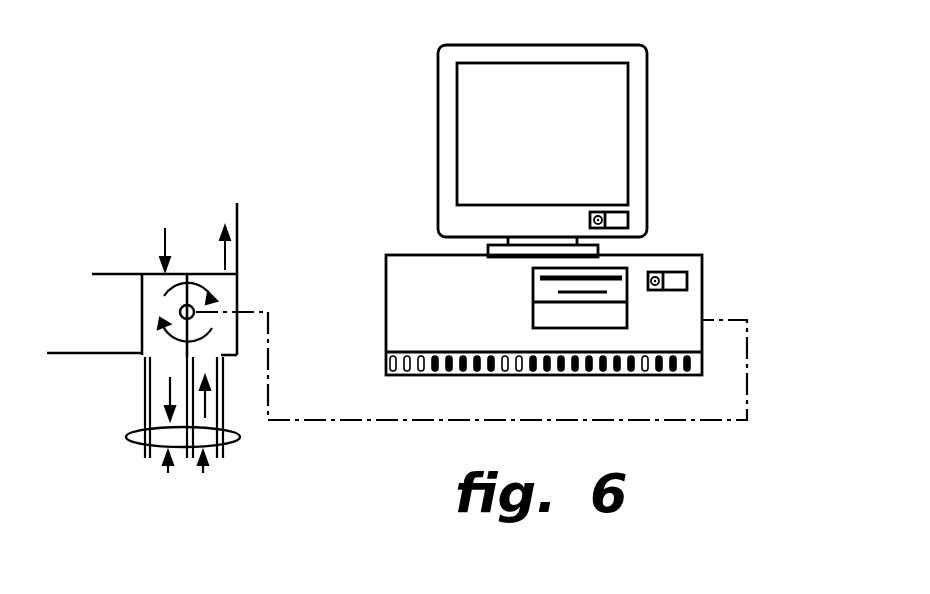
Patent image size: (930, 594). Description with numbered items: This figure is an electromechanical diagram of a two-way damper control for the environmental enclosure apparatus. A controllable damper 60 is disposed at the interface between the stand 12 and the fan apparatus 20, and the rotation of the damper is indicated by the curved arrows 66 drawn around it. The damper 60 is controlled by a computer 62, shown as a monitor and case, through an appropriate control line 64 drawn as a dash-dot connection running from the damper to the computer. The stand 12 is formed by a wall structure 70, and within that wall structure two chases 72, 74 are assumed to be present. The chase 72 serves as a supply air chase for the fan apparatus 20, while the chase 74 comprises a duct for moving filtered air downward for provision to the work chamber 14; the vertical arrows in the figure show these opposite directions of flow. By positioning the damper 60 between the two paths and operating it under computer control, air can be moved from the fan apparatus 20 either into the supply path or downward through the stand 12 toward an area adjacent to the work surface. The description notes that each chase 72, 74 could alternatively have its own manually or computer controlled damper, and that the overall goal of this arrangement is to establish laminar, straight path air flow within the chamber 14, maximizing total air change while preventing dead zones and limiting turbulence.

The stand 12 is at (146, 373).
The chamber 14 is at (84, 423).
The fan apparatus 20 is at (237, 233).
The controllable damper 60 is at (180, 295).
The computer 62 is at (398, 254).
The control line 64 is at (315, 420).
The rotation arrows 66 is at (193, 290).
The wall structure 70 is at (238, 435).
The chase 72 is at (203, 473).
The chase 74 is at (168, 473).